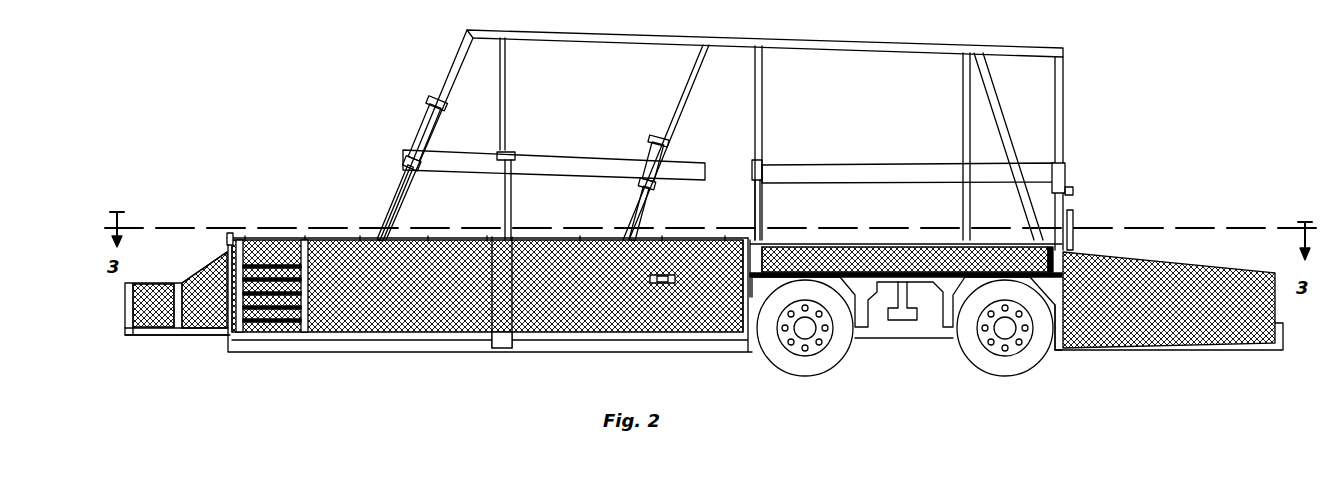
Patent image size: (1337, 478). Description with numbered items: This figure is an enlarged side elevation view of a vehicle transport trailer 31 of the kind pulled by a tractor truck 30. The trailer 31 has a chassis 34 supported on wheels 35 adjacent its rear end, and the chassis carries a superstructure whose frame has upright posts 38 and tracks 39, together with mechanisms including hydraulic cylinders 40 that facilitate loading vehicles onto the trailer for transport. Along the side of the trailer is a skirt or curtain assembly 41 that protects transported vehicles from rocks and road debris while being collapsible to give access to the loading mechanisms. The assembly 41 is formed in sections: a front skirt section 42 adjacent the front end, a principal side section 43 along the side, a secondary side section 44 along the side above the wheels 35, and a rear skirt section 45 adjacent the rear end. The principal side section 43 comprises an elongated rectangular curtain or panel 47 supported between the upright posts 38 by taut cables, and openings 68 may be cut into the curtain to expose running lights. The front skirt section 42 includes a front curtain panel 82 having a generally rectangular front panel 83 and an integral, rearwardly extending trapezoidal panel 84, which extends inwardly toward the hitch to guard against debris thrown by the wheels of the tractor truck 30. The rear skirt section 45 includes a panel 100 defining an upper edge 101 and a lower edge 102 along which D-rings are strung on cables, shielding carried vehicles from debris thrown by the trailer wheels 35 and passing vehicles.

The tractor truck 30 is at (955, 43).
The trailer 31 is at (1083, 83).
The chassis 34 is at (425, 353).
The wheels 35 is at (825, 367).
The upright posts 38 is at (503, 88).
The tracks 39 is at (570, 157).
The hydraulic cylinders 40 is at (648, 207).
The skirt or curtain assembly 41 is at (335, 237).
The front skirt section 42 is at (158, 280).
The principal side section 43 is at (345, 336).
The secondary side section 44 is at (858, 244).
The rear skirt section 45 is at (1152, 249).
The curtain or panel 47 is at (535, 318).
The openings 68 is at (665, 284).
The front curtain panel 82 is at (218, 338).
The front panel 83 is at (150, 330).
The trapezoidal panel 84 is at (195, 330).
The panel 100 is at (1240, 250).
The upper edge 101 is at (1102, 250).
The lower edge 102 is at (1140, 352).